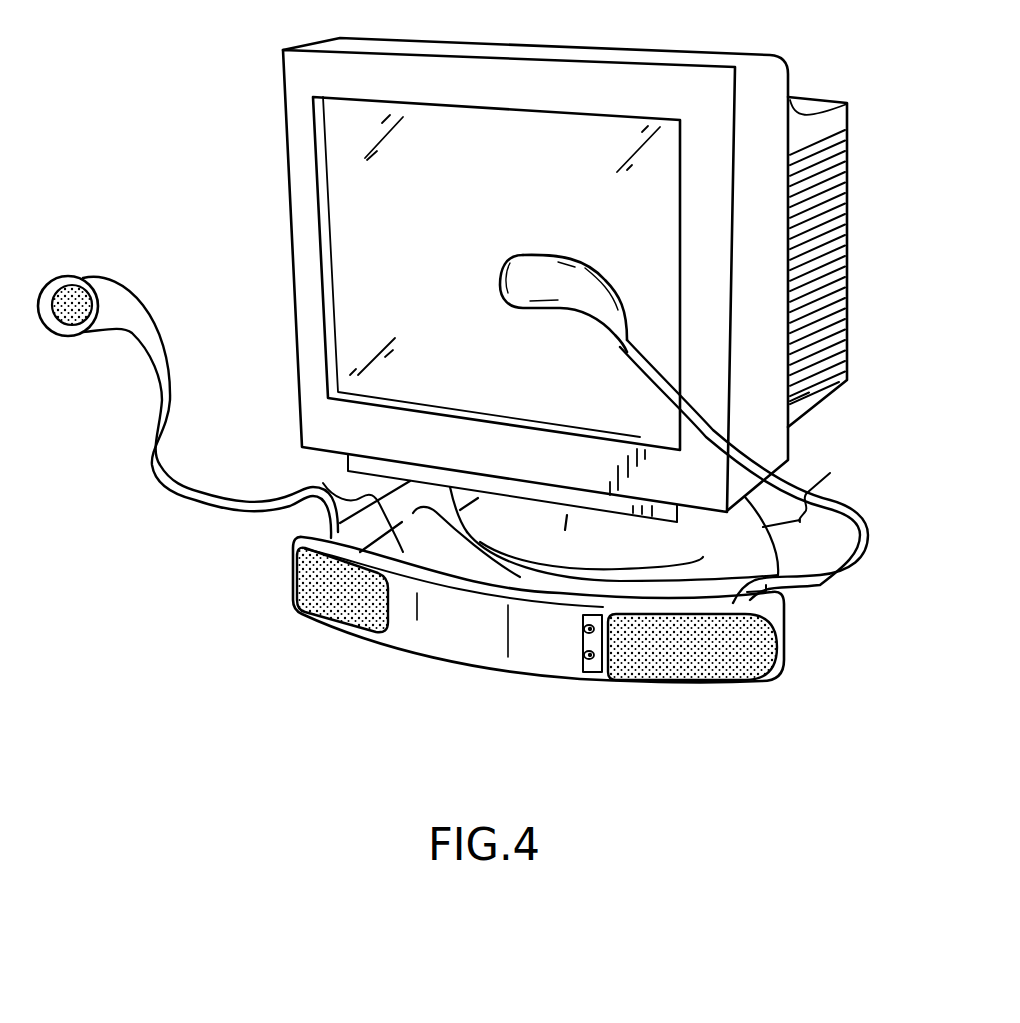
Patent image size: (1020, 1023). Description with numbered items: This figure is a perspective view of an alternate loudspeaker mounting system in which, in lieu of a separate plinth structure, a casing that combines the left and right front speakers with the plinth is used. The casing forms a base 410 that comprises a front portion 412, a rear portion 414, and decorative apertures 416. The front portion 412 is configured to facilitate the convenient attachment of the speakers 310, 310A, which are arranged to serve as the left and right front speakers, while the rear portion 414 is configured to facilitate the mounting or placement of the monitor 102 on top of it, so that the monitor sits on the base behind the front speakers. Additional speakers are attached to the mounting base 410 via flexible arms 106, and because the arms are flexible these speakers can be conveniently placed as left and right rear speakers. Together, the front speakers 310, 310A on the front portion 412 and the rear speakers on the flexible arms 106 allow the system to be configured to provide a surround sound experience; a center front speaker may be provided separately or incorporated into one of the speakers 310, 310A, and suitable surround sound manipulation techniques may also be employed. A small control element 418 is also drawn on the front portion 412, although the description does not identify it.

The monitor 102 is at (425, 275).
The flexible arms 106 is at (182, 500).
The speaker 310 is at (335, 600).
The speaker 310A is at (688, 661).
The base 410 is at (580, 605).
The front portion 412 is at (460, 643).
The rear portion 414 is at (836, 490).
The decorative apertures 416 is at (347, 507).
The control switch 418 is at (597, 673).